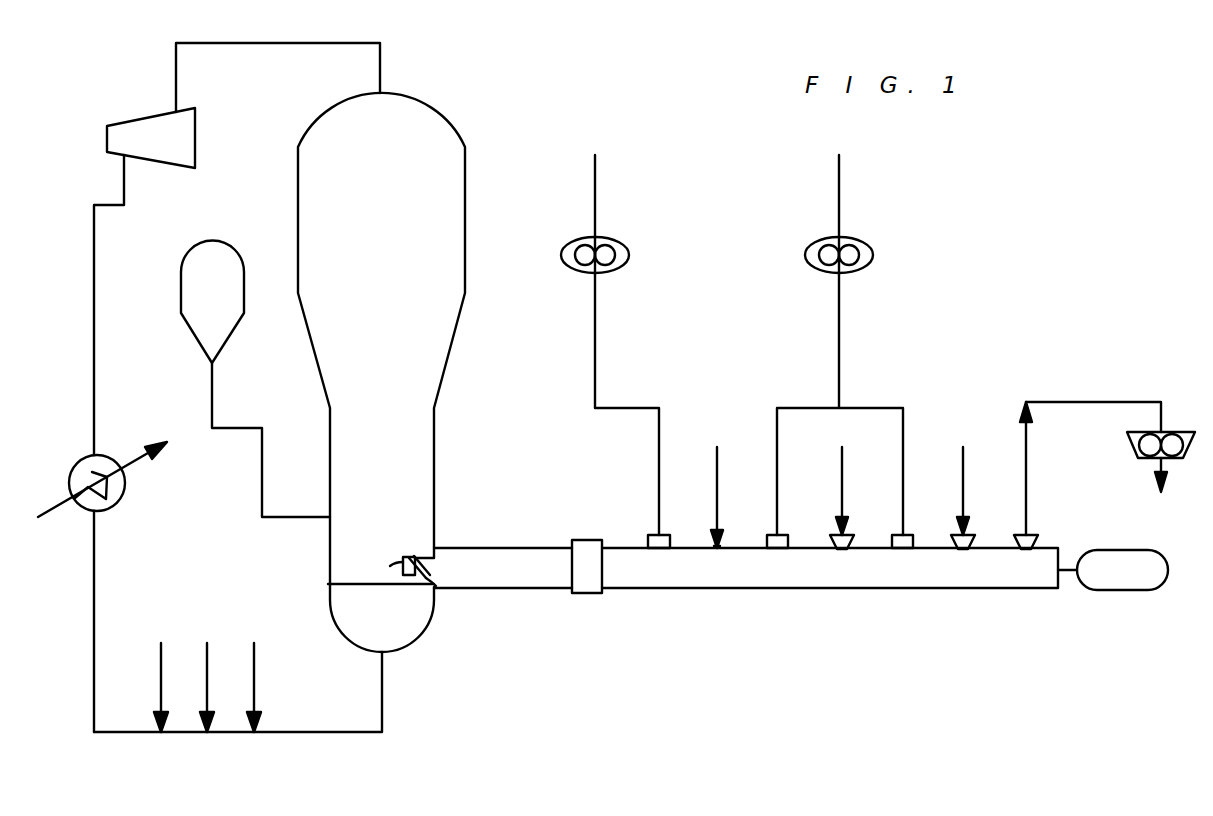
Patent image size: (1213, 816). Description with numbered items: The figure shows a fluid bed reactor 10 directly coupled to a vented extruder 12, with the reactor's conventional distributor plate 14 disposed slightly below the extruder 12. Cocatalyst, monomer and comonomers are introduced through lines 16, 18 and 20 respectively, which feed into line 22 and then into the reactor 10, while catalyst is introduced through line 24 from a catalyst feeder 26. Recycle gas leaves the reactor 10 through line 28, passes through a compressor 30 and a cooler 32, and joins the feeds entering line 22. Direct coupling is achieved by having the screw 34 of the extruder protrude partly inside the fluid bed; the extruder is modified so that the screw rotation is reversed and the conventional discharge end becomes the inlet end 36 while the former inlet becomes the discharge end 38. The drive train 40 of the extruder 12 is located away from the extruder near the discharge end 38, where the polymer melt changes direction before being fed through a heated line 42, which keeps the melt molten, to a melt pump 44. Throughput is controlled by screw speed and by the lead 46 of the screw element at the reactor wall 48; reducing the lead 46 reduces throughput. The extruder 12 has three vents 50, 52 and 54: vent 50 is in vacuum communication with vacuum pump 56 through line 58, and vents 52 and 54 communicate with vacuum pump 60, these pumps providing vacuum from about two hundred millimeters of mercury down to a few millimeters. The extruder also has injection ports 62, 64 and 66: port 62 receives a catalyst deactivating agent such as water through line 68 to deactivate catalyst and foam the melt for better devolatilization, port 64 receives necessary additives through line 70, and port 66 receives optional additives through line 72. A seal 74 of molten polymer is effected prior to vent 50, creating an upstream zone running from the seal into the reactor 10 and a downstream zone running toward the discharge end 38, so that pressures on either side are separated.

The fluid bed reactor 10 is at (466, 290).
The extruder 12 is at (490, 548).
The distributor plate 14 is at (344, 584).
The cocatalyst line 16 is at (161, 690).
The monomer line 18 is at (207, 690).
The comonomer line 20 is at (257, 660).
The feed line 22 is at (310, 732).
The catalyst line 24 is at (262, 490).
The catalyst feeder 26 is at (181, 297).
The recycle gas line 28 is at (367, 43).
The compressor 30 is at (134, 116).
The cooler 32 is at (78, 462).
The screw 34 is at (416, 555).
The inlet end 36 is at (425, 578).
The discharge end 38 is at (1038, 548).
The drive train 40 is at (1158, 554).
The line 42 is at (1093, 402).
The melt pump 44 is at (1173, 432).
The lead 46 is at (392, 566).
The reactor wall 48 is at (438, 585).
The vent 50 is at (648, 537).
The vent 52 is at (770, 537).
The vent 54 is at (908, 538).
The vacuum pump 56 is at (620, 240).
The line 58 is at (598, 334).
The vacuum pump 60 is at (866, 240).
The injection port 62 is at (712, 546).
The injection port 64 is at (850, 540).
The injection port 66 is at (972, 545).
The line 68 is at (720, 470).
The line 70 is at (845, 473).
The line 72 is at (963, 475).
The seal 74 is at (593, 582).